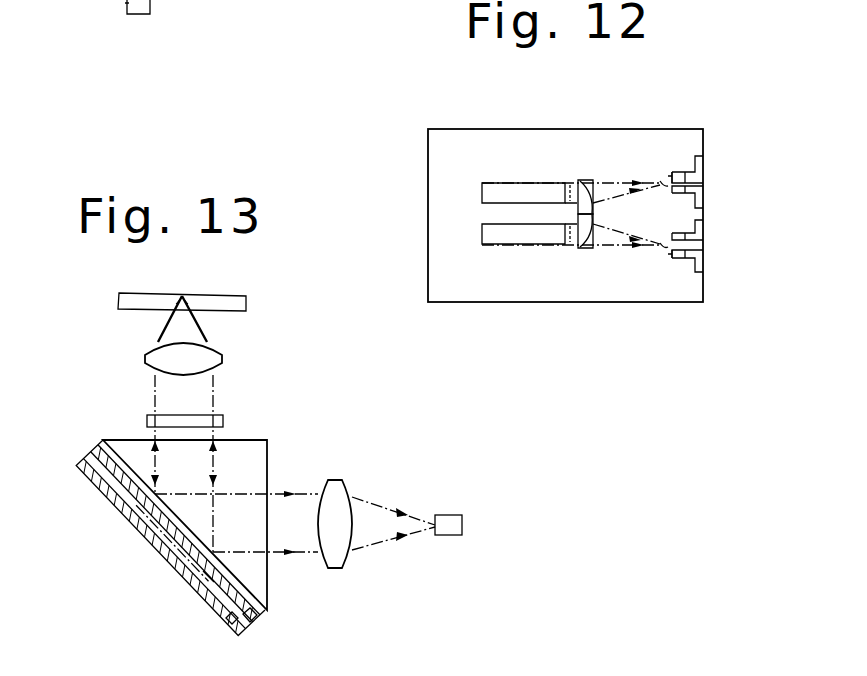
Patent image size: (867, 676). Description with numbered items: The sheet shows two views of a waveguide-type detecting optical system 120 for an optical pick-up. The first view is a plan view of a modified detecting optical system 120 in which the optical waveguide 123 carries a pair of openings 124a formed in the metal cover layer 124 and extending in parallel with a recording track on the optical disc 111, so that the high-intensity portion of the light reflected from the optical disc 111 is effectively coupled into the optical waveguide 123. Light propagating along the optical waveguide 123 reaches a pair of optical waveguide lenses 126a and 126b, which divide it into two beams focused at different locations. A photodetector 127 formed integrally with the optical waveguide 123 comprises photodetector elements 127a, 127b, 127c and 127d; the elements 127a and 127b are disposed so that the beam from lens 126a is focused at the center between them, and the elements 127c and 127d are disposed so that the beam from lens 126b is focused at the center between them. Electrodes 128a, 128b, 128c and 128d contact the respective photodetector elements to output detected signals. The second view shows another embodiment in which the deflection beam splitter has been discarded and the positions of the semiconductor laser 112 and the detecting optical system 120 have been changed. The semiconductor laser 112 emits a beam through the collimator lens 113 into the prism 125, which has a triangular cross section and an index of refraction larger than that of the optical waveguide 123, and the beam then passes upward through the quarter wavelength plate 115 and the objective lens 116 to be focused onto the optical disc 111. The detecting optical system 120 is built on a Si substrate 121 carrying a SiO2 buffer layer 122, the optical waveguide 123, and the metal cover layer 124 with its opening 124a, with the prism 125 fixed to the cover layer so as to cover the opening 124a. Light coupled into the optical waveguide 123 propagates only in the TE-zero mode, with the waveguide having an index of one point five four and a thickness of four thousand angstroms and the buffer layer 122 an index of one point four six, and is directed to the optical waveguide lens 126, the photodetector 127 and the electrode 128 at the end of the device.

In FIG. 13, the optical disc 111 is at (226, 300).
In FIG. 13, the semiconductor laser 112 is at (451, 515).
In FIG. 13, the collimator lens 113 is at (338, 490).
In FIG. 13, the quarter wavelength plate 115 is at (222, 416).
In FIG. 13, the objective lens 116 is at (208, 359).
In FIG. 13, the detecting optical system 120 is at (303, 419).
In FIG. 13, the Si substrate 121 is at (183, 572).
In FIG. 13, the buffer layer 122 is at (165, 538).
In FIG. 12, the optical waveguide 123 is at (435, 160).
In FIG. 13, the optical waveguide 123 is at (122, 480).
In FIG. 13, the metal cover layer 124 is at (97, 468).
In FIG. 12, the opening 124a is at (482, 186).
In FIG. 13, the opening 124a is at (158, 508).
In FIG. 13, the prism 125 is at (258, 453).
In FIG. 13, the optical waveguide lens 126 is at (208, 578).
In FIG. 12, the optical waveguide lens 126a is at (589, 180).
In FIG. 12, the optical waveguide lens 126b is at (587, 250).
In FIG. 13, the photodetector 127 is at (232, 623).
In FIG. 12, the photodetector element 127a is at (676, 172).
In FIG. 12, the photodetector element 127b is at (661, 183).
In FIG. 12, the photodetector element 127c is at (661, 246).
In FIG. 12, the photodetector element 127d is at (680, 257).
In FIG. 13, the electrode 128 is at (252, 621).
In FIG. 12, the electrode 128a is at (700, 160).
In FIG. 12, the electrode 128b is at (698, 194).
In FIG. 12, the electrode 128c is at (698, 226).
In FIG. 12, the electrode 128d is at (698, 262).